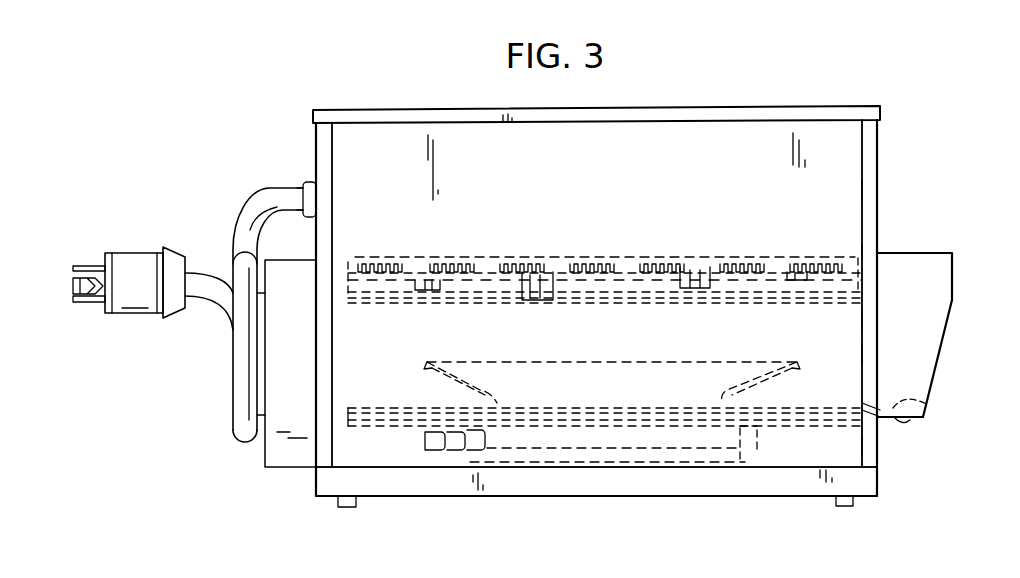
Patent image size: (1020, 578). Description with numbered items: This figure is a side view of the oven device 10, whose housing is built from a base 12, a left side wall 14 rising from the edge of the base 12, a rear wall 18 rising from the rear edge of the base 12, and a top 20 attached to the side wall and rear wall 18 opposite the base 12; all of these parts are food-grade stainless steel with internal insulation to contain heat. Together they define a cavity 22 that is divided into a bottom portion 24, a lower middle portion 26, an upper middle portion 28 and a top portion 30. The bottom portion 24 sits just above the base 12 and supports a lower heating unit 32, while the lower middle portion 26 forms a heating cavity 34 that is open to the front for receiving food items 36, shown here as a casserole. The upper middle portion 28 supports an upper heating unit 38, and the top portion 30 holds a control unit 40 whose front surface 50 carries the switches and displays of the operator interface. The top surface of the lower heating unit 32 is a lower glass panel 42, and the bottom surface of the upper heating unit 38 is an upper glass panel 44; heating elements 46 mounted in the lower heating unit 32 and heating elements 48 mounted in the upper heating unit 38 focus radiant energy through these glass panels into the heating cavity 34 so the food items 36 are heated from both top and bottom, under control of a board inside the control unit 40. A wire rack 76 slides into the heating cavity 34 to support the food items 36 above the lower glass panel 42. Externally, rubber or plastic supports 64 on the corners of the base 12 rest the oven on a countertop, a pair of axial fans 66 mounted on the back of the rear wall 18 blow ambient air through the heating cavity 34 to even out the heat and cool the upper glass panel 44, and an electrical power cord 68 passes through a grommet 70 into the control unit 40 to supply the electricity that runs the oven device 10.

The oven device 10 is at (340, 60).
The base 12 is at (735, 497).
The left side wall 14 is at (736, 179).
The rear wall 18 is at (322, 156).
The top 20 is at (735, 105).
The cavity 22 is at (413, 449).
The bottom portion 24 is at (366, 457).
The lower middle portion 26 is at (376, 339).
The upper middle portion 28 is at (420, 289).
The top portion 30 is at (369, 157).
The lower heating unit 32 is at (839, 444).
The heating cavity 34 is at (835, 333).
The food items 36 is at (576, 362).
The upper heating unit 38 is at (862, 250).
The control unit 40 is at (829, 190).
The lower glass panel 42 is at (794, 422).
The upper glass panel 44 is at (842, 302).
The heating elements 46 is at (608, 434).
The heating elements 48 is at (598, 267).
The front surface 50 is at (878, 141).
The supports 64 is at (346, 511).
The axial fans 66 is at (304, 377).
The electrical power cord 68 is at (233, 376).
The grommet 70 is at (304, 220).
The wire rack 76 is at (924, 404).